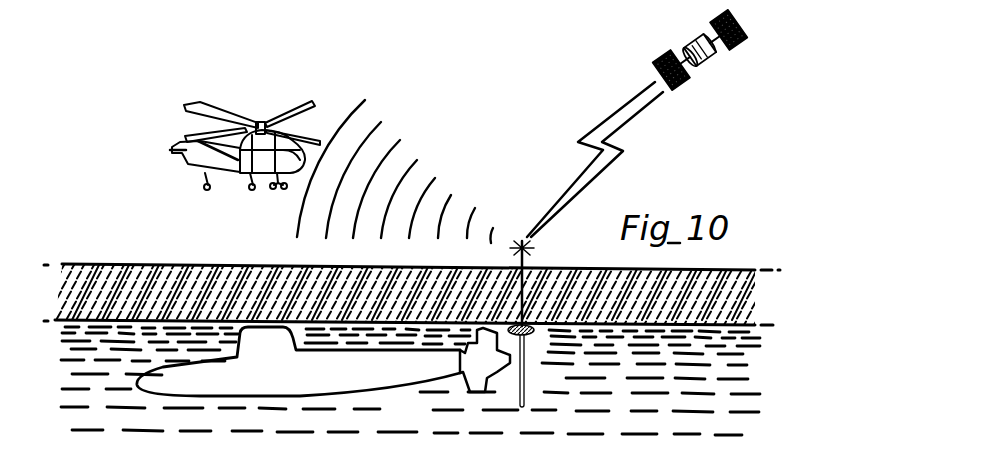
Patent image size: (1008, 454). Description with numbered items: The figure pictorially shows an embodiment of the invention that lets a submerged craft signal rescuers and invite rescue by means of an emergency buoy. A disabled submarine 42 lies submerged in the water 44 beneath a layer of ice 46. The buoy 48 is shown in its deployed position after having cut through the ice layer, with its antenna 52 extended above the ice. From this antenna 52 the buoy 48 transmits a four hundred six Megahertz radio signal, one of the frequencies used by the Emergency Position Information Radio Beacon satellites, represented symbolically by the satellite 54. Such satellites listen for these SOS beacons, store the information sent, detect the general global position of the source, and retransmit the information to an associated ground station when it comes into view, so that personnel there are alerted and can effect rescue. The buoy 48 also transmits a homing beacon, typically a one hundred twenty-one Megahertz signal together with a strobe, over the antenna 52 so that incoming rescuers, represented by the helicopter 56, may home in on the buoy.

The disabled submarine 42 is at (280, 378).
The water 44 is at (426, 419).
The layer of ice 46 is at (249, 284).
The buoy 48 is at (526, 348).
The antenna 52 is at (531, 244).
The Emergency Position Information Radio Beacon satellite 54 is at (707, 66).
The helicopter 56 is at (224, 182).